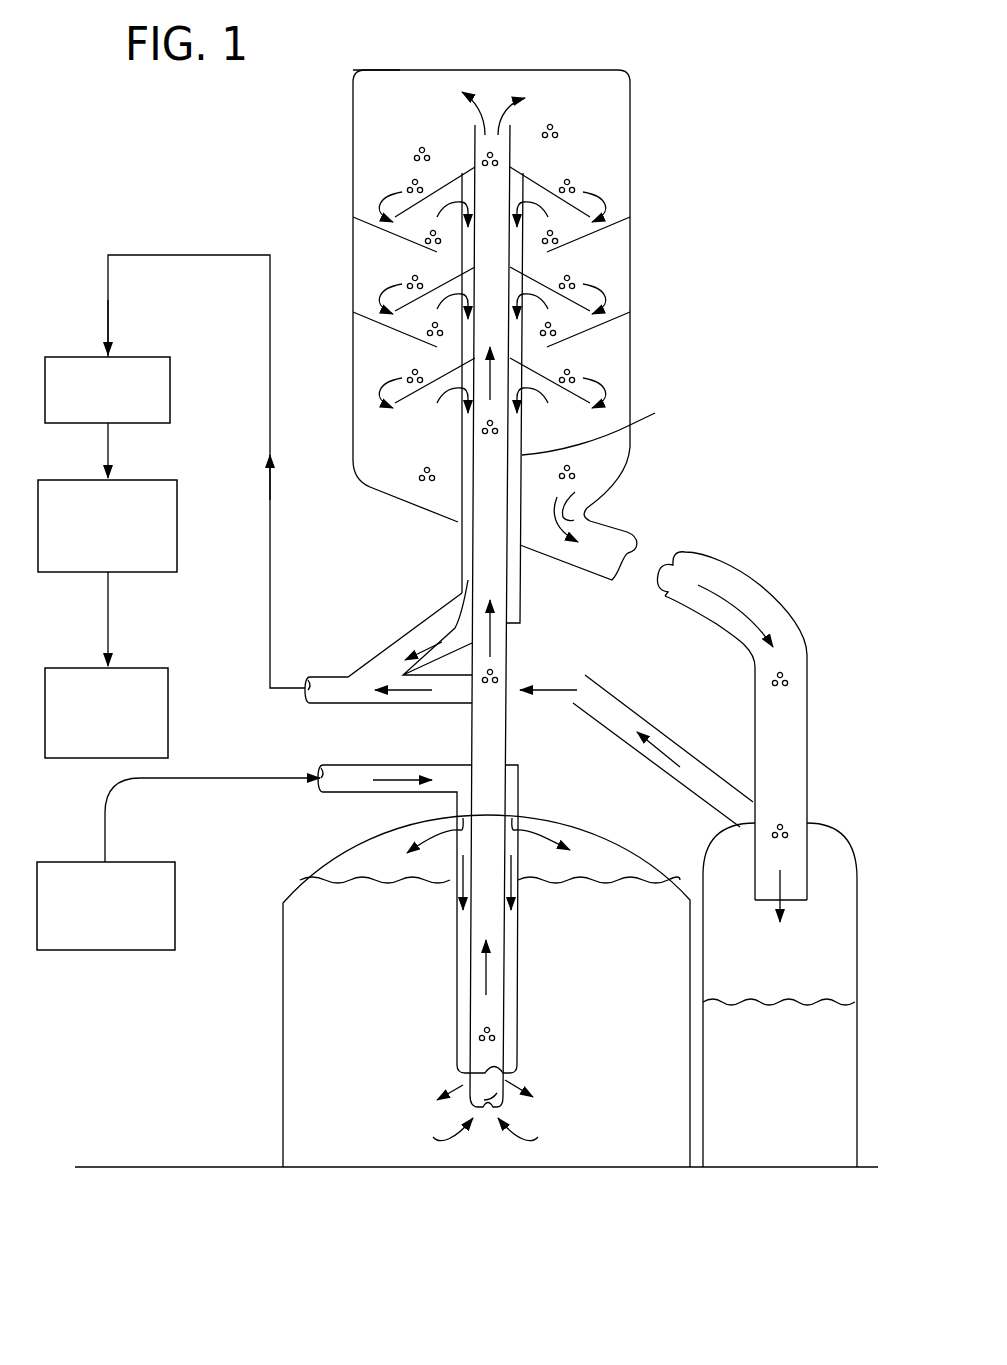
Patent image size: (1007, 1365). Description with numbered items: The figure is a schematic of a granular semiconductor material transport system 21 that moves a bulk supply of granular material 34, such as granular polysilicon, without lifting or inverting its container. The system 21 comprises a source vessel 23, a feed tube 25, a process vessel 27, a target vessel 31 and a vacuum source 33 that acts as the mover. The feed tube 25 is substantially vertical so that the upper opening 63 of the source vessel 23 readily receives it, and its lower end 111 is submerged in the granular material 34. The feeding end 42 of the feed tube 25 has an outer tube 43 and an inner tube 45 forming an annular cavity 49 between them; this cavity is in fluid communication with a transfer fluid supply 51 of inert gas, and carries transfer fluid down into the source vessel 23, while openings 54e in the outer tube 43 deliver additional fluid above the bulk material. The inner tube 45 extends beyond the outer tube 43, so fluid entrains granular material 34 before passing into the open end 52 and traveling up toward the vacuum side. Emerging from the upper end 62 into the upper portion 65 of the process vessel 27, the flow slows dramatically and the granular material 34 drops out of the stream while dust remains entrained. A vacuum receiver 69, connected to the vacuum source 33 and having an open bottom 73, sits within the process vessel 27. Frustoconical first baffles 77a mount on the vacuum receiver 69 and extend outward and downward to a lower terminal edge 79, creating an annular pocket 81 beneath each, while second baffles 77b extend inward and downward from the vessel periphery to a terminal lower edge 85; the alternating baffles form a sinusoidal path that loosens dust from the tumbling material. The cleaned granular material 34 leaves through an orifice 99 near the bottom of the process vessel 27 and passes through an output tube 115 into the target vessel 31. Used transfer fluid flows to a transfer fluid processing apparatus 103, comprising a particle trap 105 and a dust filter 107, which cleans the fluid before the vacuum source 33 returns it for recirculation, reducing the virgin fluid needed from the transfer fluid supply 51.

The granular semiconductor material transport system 21 is at (693, 428).
The source vessel 23 is at (283, 1075).
The feed tube 25 is at (457, 972).
The process vessel 27 is at (630, 170).
The target vessel 31 is at (833, 842).
The vacuum source 33 is at (120, 668).
The granular material 34 is at (578, 1050).
The feeding end 42 is at (518, 953).
The outer tube 43 is at (463, 1018).
The inner tube 45 is at (497, 1093).
The annular cavity 49 is at (510, 1019).
The transfer fluid supply 51 is at (177, 905).
The open end 52 is at (491, 1113).
The openings 54e is at (527, 820).
The upper end 62 is at (513, 140).
The upper opening 63 is at (520, 815).
The upper portion 65 is at (397, 89).
The vacuum receiver 69 is at (601, 425).
The open bottom 73 is at (446, 626).
The first baffle 77a is at (537, 180).
The second baffle 77b is at (605, 225).
The lower terminal edge 79 is at (590, 228).
The annular pocket 81 is at (456, 196).
The terminal lower edge 85 is at (560, 255).
The orifice 99 is at (600, 520).
The transfer fluid processing apparatus 103 is at (200, 357).
The particle trap 105 is at (135, 357).
The dust filter 107 is at (135, 480).
The lower end 111 is at (518, 1045).
The output tube 115 is at (765, 590).